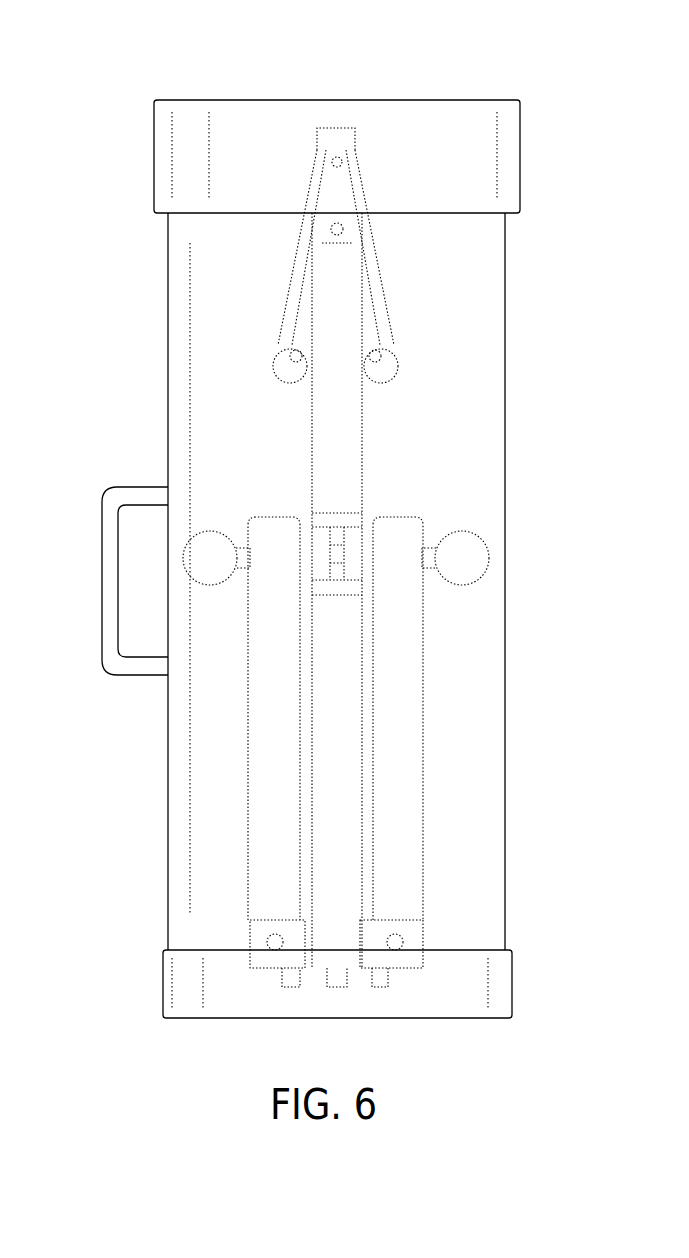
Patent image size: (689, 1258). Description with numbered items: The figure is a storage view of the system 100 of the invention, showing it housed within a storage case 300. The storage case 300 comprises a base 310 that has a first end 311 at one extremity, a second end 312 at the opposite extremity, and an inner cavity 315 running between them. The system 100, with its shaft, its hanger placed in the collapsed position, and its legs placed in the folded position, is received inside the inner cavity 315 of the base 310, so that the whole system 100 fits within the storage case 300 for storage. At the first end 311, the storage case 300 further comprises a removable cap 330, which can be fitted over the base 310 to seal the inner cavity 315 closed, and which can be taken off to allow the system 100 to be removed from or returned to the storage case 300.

The storage case 300 is at (511, 1054).
The base 310 is at (502, 257).
The first end 311 is at (173, 233).
The second end 312 is at (175, 968).
The inner cavity 315 is at (200, 787).
The removable cap 330 is at (217, 145).
The system 100 is at (330, 492).